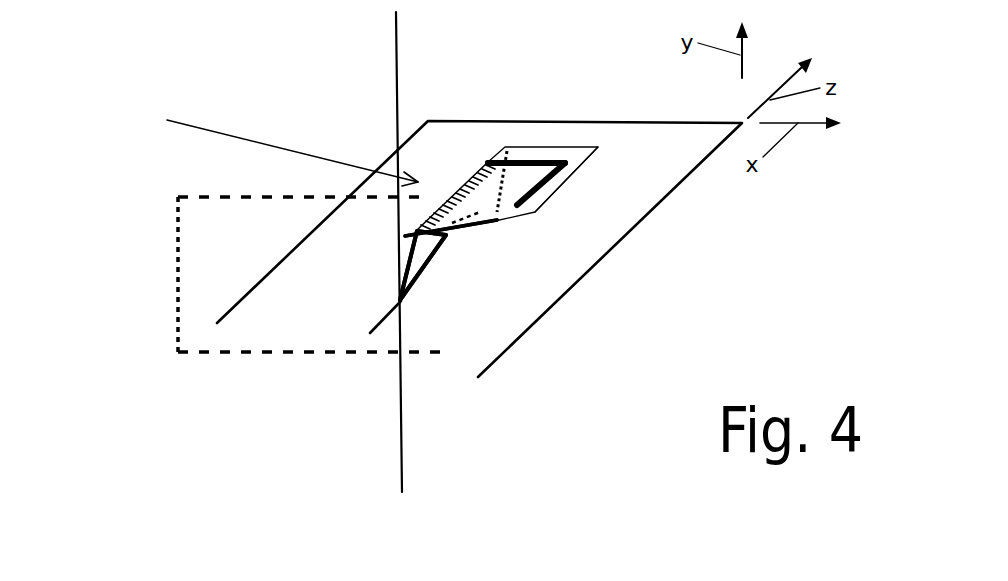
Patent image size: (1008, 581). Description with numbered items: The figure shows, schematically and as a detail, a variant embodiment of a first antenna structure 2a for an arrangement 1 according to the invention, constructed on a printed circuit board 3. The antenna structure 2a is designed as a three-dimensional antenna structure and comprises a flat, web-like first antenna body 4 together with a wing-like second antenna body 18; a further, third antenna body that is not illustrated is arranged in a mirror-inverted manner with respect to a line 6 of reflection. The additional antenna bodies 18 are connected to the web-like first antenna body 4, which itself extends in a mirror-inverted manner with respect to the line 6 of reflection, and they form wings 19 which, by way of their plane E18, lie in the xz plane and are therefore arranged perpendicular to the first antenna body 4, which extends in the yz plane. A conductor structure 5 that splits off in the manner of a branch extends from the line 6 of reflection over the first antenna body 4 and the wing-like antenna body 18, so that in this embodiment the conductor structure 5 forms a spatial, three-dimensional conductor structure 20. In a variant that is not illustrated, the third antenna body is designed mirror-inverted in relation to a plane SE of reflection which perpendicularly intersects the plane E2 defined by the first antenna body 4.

The arrangement 1 is at (584, 92).
The first antenna structure 2a is at (476, 147).
The printed circuit board 3 is at (282, 146).
The first antenna body 4 is at (430, 263).
The conductor structure 5 is at (463, 190).
The three-dimensional conductor structure 20 is at (610, 325).
The line of reflection 6 is at (400, 78).
The second antenna body 18 is at (580, 153).
The wings 19 is at (525, 155).
The plane E2 is at (457, 238).
The plane of the wing E18 is at (577, 163).
The plane of reflection SE is at (223, 217).